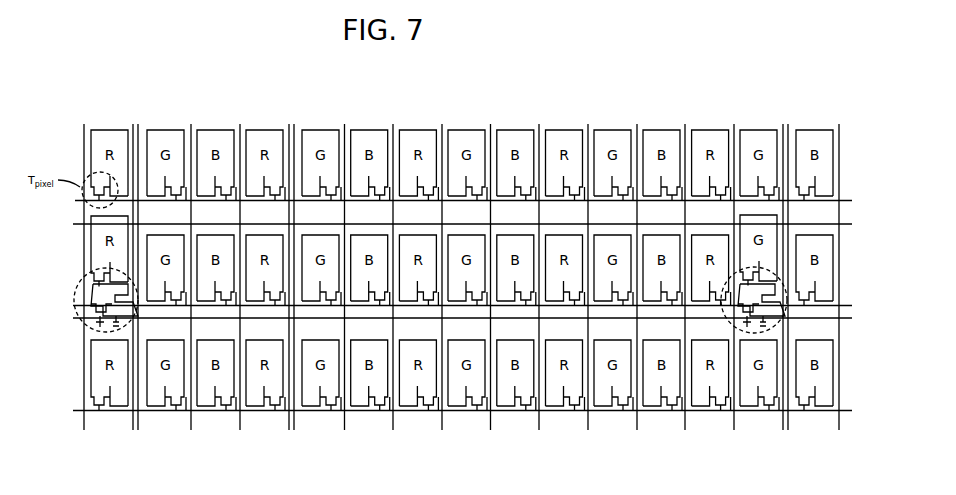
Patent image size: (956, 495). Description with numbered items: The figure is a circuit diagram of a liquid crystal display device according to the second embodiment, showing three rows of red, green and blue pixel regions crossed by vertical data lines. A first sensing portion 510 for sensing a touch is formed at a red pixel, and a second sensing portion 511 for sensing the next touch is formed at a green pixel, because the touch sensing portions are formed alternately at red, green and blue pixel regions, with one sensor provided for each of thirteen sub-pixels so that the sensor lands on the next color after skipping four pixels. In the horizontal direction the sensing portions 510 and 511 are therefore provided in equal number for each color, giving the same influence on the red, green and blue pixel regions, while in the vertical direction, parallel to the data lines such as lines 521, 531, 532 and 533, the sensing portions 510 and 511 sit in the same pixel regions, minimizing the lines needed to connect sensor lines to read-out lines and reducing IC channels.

The first sensing portion 510 is at (118, 333).
The second sensing portion 511 is at (723, 333).
The data line 521 is at (133, 124).
The data line 531 is at (84, 124).
The data line 532 is at (141, 124).
The data line 533 is at (192, 124).